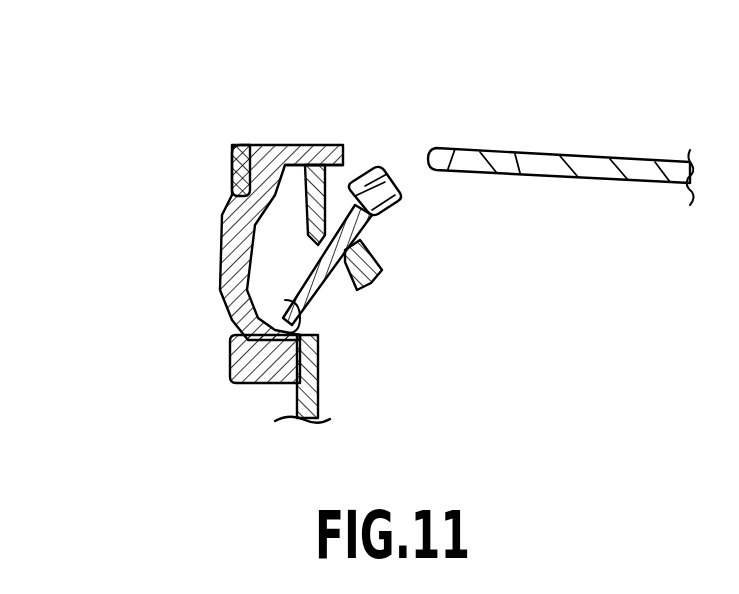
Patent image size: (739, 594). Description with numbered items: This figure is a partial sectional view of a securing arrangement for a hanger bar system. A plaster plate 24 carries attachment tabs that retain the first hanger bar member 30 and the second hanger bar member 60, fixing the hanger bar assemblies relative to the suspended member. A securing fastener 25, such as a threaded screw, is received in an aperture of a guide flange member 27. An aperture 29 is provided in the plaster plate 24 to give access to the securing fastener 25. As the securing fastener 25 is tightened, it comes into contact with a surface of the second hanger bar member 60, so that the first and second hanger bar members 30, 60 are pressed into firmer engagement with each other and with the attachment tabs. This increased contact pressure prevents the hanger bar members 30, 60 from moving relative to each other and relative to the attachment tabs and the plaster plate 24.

The plaster plate 24 is at (470, 150).
The securing fastener 25 is at (368, 222).
The guide flange member 27 is at (382, 275).
The aperture 29 is at (392, 152).
The first hanger bar member 30 is at (212, 292).
The second hanger bar member 60 is at (300, 333).